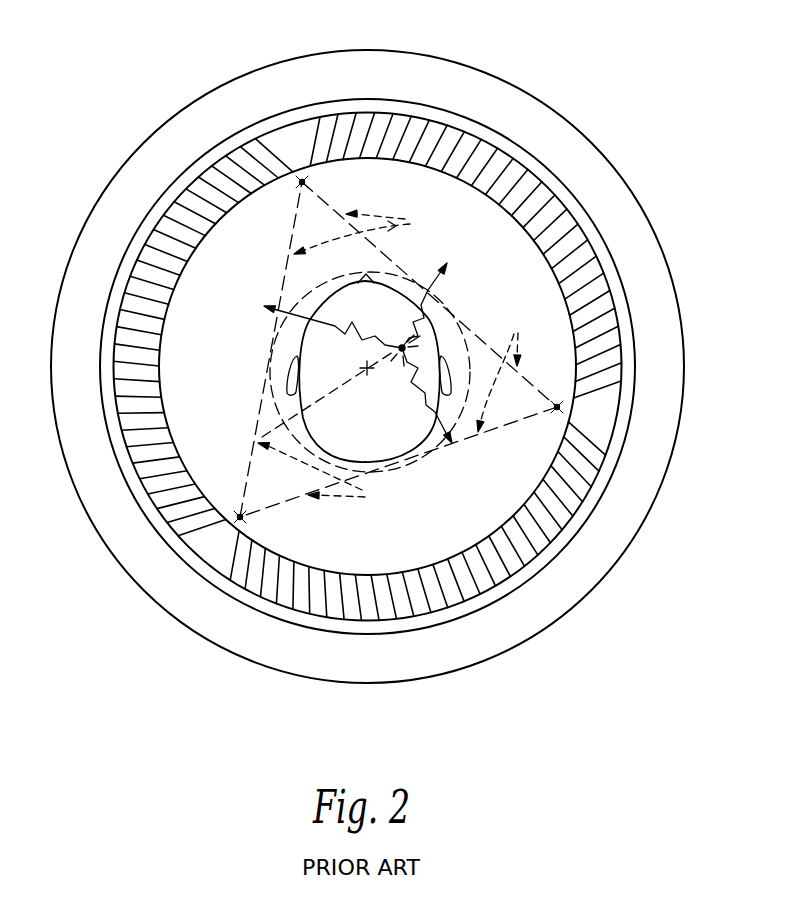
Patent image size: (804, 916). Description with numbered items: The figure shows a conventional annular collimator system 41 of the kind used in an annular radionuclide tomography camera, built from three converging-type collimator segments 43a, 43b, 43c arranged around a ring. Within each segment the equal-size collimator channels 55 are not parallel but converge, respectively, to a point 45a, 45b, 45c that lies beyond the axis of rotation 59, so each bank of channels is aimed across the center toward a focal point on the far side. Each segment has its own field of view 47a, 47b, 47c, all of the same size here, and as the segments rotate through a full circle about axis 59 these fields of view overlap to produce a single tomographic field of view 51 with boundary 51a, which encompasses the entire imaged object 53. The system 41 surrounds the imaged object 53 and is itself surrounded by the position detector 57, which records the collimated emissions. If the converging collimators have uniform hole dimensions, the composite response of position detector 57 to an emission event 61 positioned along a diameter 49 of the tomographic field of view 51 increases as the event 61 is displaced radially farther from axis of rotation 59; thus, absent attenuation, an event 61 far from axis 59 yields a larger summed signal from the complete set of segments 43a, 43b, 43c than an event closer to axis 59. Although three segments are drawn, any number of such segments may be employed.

The annular collimator system 41 is at (157, 24).
The collimator segment 43a is at (570, 202).
The collimator segment 43b is at (497, 588).
The collimator segment 43c is at (145, 242).
The convergence point 45a is at (242, 517).
The convergence point 45b is at (304, 182).
The convergence point 45c is at (556, 409).
The collimator segment field of view 47a is at (331, 478).
The collimator segment field of view 47b is at (371, 232).
The collimator segment field of view 47c is at (509, 370).
The diameter 49 is at (318, 402).
The tomographic field of view 51 is at (295, 343).
The boundary 51a is at (302, 296).
The imaged object 53 is at (290, 412).
The collimator channels 55 is at (162, 499).
The position detector 57 is at (510, 110).
The axis of rotation 59 is at (363, 385).
The emission event 61 is at (399, 333).